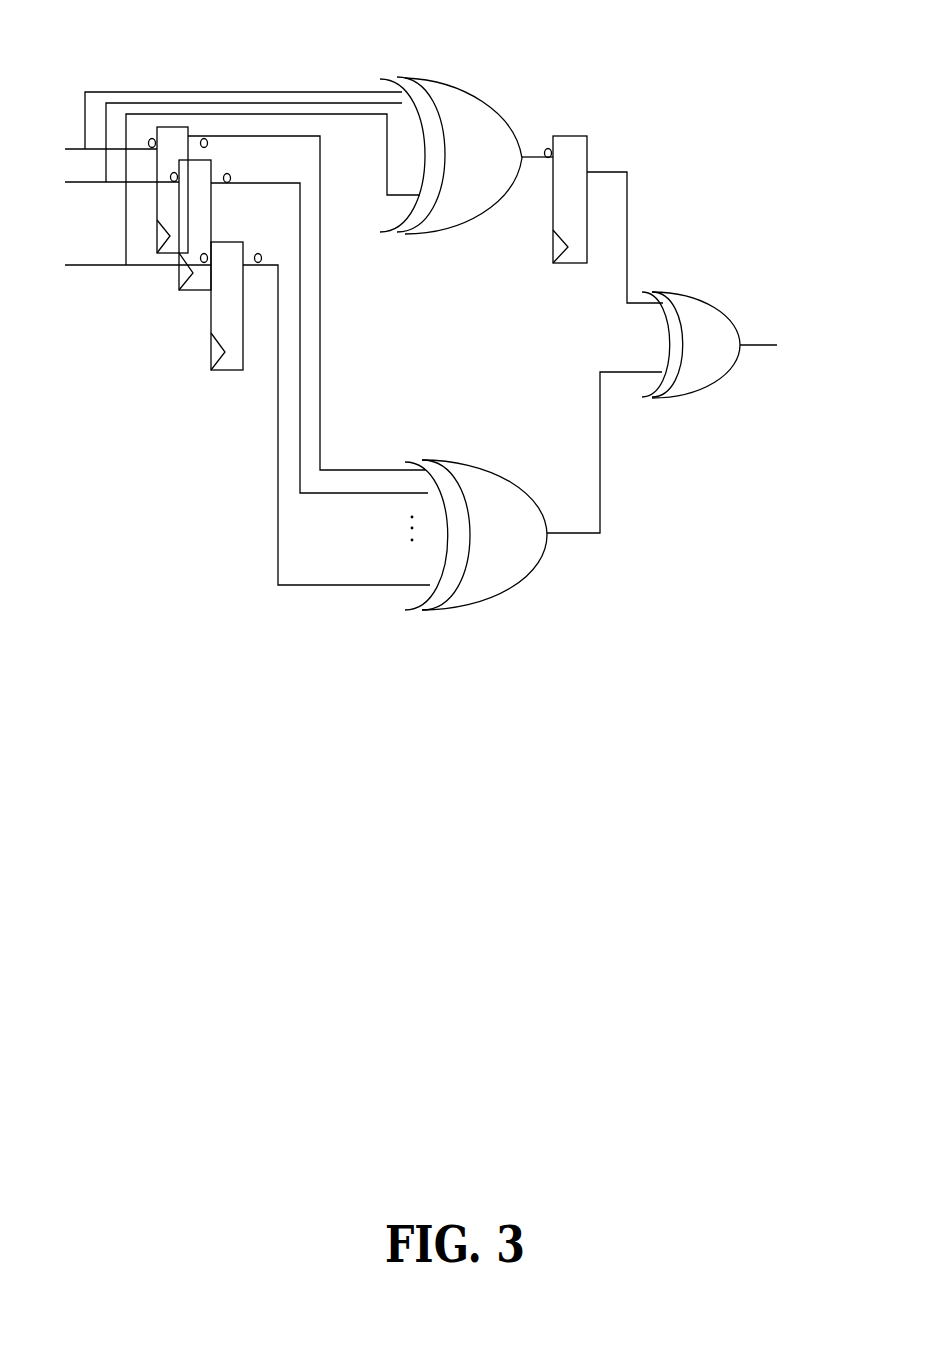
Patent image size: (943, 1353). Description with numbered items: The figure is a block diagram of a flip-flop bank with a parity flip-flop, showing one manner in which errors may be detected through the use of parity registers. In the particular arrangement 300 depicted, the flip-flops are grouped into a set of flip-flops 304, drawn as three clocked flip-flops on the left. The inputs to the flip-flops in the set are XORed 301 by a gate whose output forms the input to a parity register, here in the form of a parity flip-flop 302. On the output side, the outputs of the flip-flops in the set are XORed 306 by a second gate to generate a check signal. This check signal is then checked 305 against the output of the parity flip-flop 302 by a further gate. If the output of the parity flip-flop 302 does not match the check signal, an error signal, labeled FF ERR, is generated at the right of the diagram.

The arrangement 300 is at (555, 92).
The XOR of flip-flop inputs 301 is at (463, 77).
The parity flip-flop 302 is at (583, 130).
The set of flip-flops 304 is at (212, 328).
The check of parity output against check signal 305 is at (713, 303).
The XOR of flip-flop outputs 306 is at (478, 462).